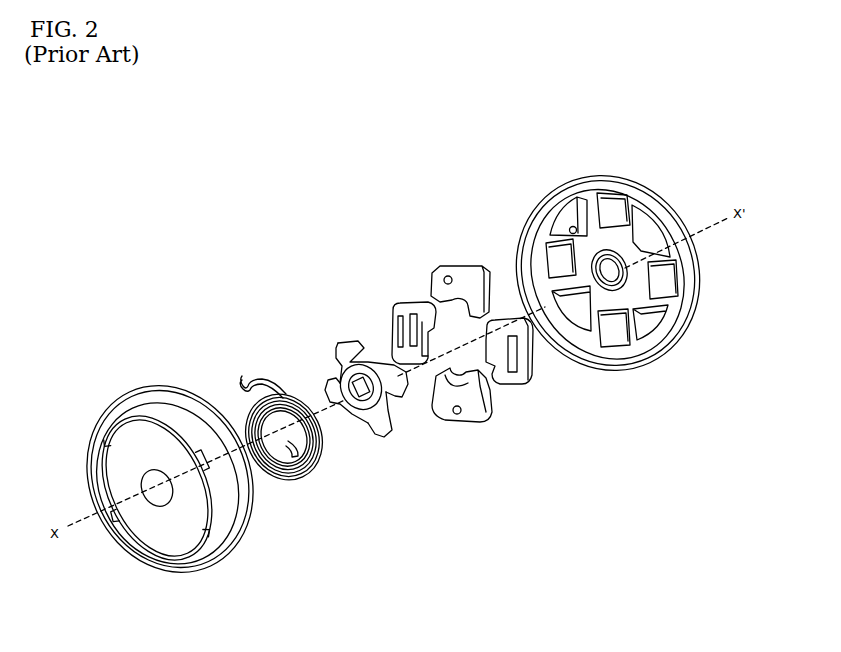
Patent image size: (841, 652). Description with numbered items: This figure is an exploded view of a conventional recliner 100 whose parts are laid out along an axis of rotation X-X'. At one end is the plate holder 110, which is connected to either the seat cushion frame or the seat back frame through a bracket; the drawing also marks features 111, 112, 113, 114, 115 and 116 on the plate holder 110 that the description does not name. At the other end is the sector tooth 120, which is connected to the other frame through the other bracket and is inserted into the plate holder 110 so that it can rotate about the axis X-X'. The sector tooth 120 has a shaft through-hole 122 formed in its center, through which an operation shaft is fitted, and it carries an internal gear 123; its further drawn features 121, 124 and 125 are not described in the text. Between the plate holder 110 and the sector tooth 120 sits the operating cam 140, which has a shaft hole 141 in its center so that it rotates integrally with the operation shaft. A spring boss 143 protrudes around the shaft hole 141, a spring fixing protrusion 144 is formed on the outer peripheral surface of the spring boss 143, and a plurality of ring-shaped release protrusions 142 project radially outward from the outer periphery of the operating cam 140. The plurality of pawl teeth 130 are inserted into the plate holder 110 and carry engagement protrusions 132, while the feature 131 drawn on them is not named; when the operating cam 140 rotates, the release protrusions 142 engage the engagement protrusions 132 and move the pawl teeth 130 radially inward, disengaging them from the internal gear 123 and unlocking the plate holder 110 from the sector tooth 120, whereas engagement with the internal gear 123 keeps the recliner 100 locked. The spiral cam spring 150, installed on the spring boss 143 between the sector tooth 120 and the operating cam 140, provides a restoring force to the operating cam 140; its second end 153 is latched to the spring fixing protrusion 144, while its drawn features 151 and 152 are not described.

The recliner 100 is at (330, 221).
The plate holder 110 is at (604, 156).
The housing face plate 111 is at (640, 358).
The center hub 112 is at (628, 270).
The openings 113 is at (562, 218).
The protrusion 114 is at (575, 226).
The outer rim 115 is at (690, 286).
The inner rim 116 is at (628, 368).
The sector tooth 120 is at (131, 379).
The housing rim 121 is at (200, 556).
The shaft through-hole 122 is at (152, 548).
The internal gear 123 is at (186, 404).
The center hole 124 is at (100, 504).
The upper notch 125 is at (158, 420).
The pawl teeth 130 is at (453, 248).
The friction block 131 is at (452, 276).
The engagement protrusions 132 is at (470, 300).
The operating cam 140 is at (347, 350).
The shaft hole 141 is at (365, 410).
The release protrusions 142 is at (362, 342).
The spring boss 143 is at (345, 340).
The spring fixing protrusion 144 is at (378, 426).
The cam spring 150 is at (318, 486).
The spring coil 151 is at (318, 470).
The outer hook 152 is at (243, 375).
The second end 153 is at (288, 440).